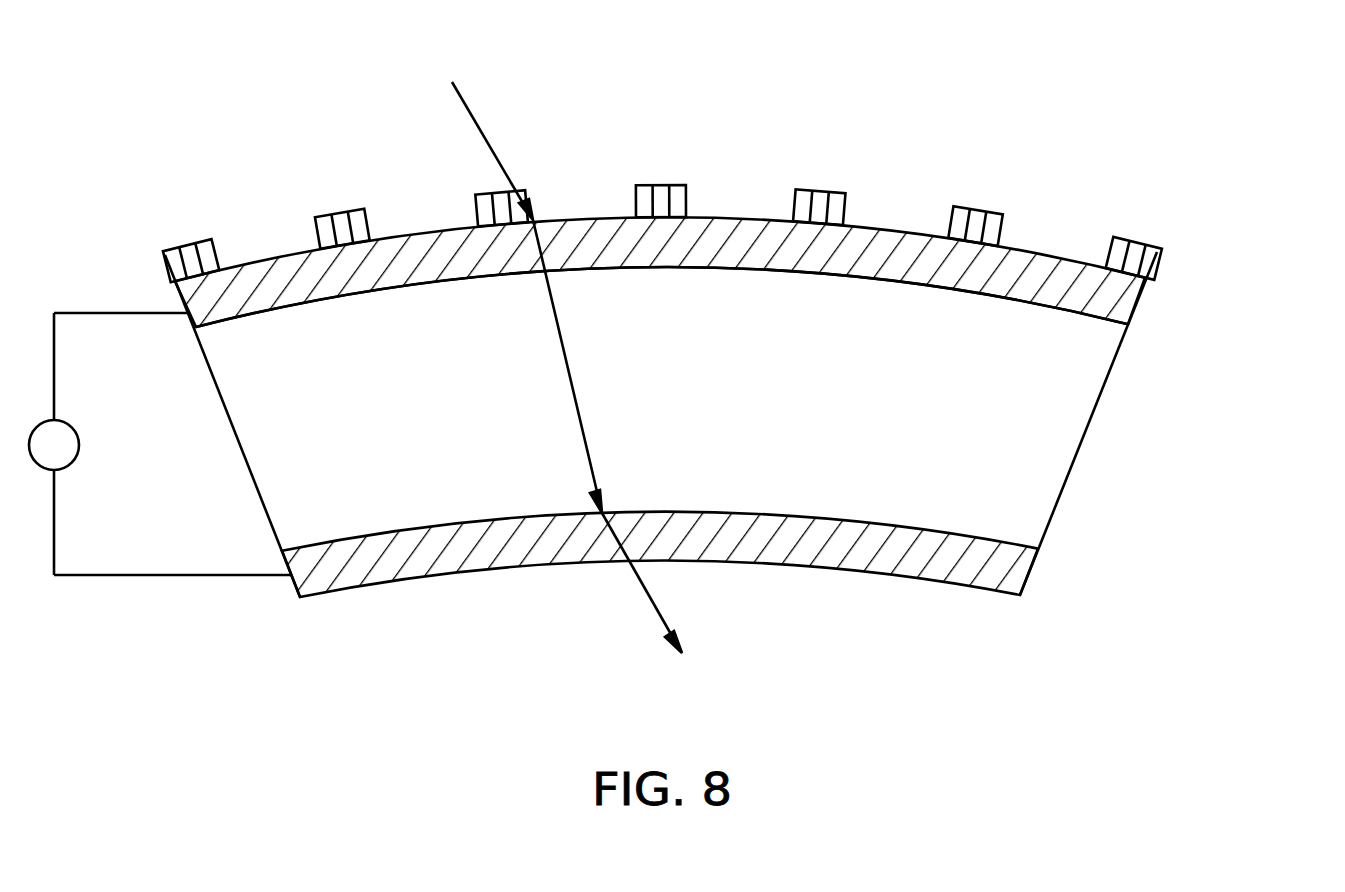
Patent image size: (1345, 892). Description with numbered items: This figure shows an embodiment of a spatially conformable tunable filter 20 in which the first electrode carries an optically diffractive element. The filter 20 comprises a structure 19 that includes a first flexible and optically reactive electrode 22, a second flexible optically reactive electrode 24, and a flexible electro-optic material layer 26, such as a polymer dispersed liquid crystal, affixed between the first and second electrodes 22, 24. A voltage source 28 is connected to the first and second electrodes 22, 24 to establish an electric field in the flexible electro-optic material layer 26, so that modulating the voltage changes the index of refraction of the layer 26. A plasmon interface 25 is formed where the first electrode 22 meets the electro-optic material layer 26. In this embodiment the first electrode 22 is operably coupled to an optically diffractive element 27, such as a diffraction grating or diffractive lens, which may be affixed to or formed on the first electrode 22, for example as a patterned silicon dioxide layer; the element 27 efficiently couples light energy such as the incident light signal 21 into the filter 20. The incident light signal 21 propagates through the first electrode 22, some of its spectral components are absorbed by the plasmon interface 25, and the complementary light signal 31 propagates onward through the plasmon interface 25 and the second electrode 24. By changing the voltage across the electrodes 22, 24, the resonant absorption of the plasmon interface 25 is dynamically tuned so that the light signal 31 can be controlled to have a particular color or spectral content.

The structure 19 is at (748, 391).
The spatially conformable tunable filter 20 is at (960, 135).
The light signal 21 is at (470, 110).
The first electrode 22 is at (1123, 308).
The second electrode 24 is at (1010, 572).
The plasmon interface 25 is at (958, 293).
The flexible electro-optic material layer 26 is at (1083, 370).
The optically diffractive element 27 is at (698, 242).
The voltage source 28 is at (78, 435).
The light signal 31 is at (575, 402).